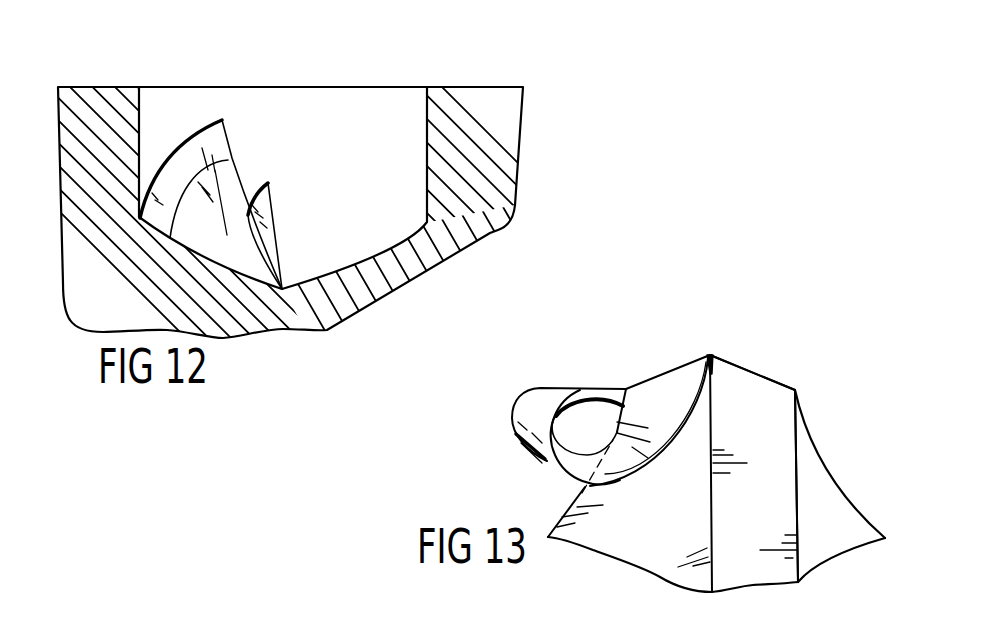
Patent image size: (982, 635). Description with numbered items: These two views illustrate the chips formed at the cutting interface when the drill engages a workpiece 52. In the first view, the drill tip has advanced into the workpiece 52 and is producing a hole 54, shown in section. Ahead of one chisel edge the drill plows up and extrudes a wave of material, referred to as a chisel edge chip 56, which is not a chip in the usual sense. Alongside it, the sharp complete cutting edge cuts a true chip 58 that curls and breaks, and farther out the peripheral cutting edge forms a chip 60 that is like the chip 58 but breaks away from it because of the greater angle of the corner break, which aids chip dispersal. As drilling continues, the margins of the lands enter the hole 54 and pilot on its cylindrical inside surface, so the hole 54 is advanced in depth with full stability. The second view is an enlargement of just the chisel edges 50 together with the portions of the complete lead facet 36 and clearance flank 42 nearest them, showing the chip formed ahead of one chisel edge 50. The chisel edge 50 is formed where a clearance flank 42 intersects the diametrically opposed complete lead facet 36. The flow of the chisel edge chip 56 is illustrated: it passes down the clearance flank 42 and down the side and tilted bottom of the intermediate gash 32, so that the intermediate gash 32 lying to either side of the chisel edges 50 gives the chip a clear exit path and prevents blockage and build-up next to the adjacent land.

In FIG. 12, the workpiece 52 is at (518, 134).
In FIG. 12, the hole 54 is at (425, 130).
In FIG. 12, the chisel edge chip 56 is at (270, 217).
In FIG. 13, the chisel edge chip 56 is at (523, 421).
In FIG. 12, the true chip 58 is at (240, 192).
In FIG. 12, the chips 60 is at (213, 146).
In FIG. 13, the chisel edge 50 is at (735, 358).
In FIG. 13, the complete lead facet 36 is at (770, 417).
In FIG. 13, the intermediate gash 32 is at (567, 494).
In FIG. 13, the clearance flank 42 is at (549, 535).